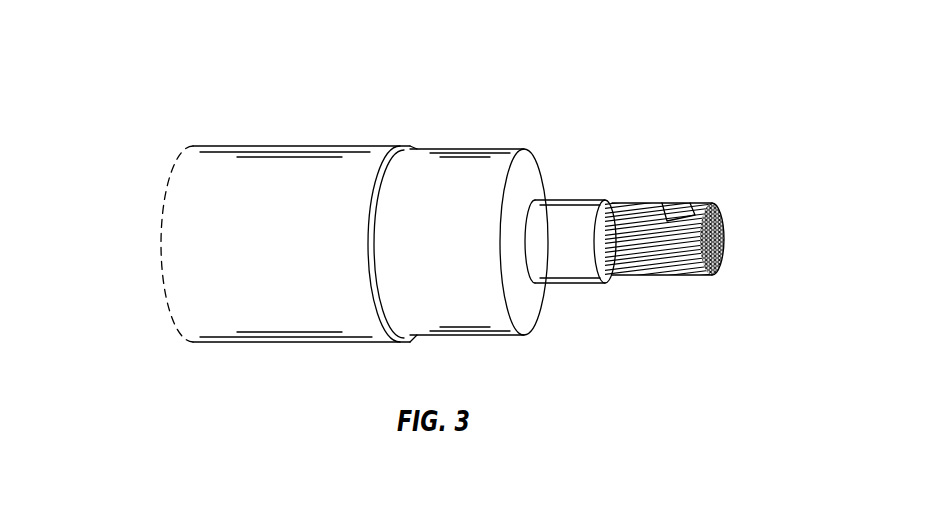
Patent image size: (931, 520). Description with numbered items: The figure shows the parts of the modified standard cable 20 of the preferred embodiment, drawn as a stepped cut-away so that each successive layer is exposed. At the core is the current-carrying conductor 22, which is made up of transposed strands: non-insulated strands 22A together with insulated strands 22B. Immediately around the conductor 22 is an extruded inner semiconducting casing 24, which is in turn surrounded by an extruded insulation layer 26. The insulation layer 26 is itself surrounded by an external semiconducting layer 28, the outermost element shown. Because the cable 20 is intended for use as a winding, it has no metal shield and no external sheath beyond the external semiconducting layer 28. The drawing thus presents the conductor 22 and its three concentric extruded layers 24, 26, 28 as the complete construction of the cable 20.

The cable 20 is at (138, 150).
The current-carrying conductor 22 is at (690, 236).
The non-insulated strands 22A is at (647, 263).
The insulated strands 22B is at (682, 207).
The inner semiconducting casing 24 is at (587, 196).
The insulation layer 26 is at (455, 148).
The external semiconducting layer 28 is at (290, 145).